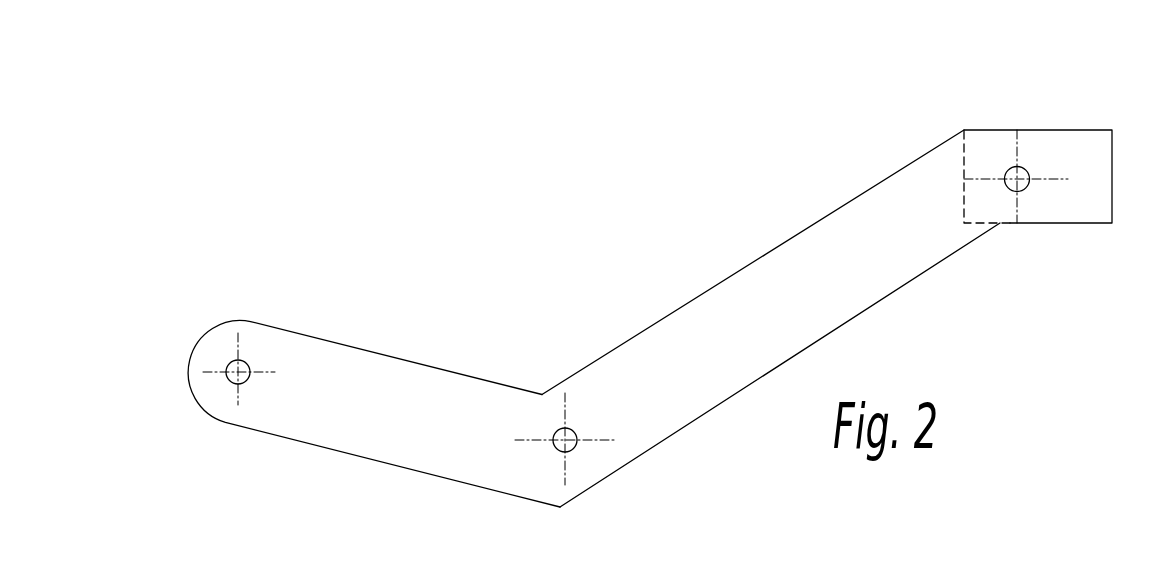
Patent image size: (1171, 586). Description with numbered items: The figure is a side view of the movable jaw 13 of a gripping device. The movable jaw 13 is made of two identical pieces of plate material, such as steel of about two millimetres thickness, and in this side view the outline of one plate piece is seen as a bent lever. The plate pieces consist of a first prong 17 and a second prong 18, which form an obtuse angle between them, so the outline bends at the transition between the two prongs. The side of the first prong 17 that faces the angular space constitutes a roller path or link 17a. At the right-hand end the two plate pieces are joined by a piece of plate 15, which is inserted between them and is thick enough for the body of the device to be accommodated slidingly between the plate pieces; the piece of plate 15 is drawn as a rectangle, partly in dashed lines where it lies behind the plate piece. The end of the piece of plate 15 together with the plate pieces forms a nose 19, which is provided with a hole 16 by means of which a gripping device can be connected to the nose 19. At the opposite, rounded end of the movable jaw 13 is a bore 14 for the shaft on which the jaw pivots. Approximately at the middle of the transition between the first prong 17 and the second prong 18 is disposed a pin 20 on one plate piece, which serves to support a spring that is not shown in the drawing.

The movable jaw 13 is at (395, 333).
The bore 14 is at (247, 360).
The piece of plate 15 is at (985, 142).
The hole 16 is at (1026, 188).
The first prong 17 is at (882, 272).
The roller path 17a is at (703, 293).
The second prong 18 is at (363, 428).
The nose 19 is at (1037, 218).
The pin 20 is at (574, 449).